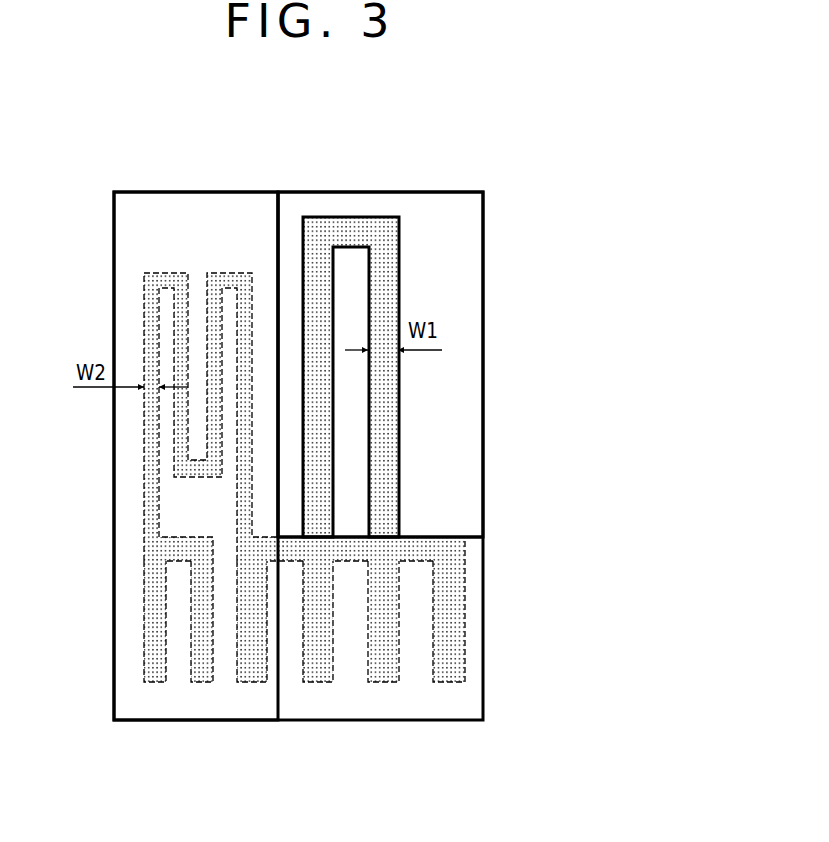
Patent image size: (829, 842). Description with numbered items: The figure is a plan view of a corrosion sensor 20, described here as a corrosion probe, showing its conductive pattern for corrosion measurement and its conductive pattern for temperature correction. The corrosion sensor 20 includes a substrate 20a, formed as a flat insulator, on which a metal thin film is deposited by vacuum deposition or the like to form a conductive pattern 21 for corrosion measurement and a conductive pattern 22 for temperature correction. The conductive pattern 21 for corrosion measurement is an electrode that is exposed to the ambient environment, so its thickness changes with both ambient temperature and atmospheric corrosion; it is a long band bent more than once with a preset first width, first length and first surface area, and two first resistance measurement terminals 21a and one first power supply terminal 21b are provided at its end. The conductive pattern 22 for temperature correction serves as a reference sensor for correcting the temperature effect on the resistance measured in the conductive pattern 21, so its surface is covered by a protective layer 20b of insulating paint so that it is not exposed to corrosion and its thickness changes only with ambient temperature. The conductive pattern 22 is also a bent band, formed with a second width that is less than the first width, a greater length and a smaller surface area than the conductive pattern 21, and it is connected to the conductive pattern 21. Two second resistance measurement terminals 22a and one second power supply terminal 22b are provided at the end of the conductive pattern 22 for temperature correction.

The corrosion sensor 20 is at (92, 76).
The substrate 20a is at (477, 263).
The protective layer 20b is at (132, 238).
The conductive pattern for corrosion measurement 21 is at (348, 232).
The first resistance measurement terminals 21a is at (327, 677).
The first power supply terminal 21b is at (453, 677).
The conductive pattern for temperature correction 22 is at (228, 277).
The second resistance measurement terminals 22a is at (202, 677).
The second power supply terminal 22b is at (157, 677).